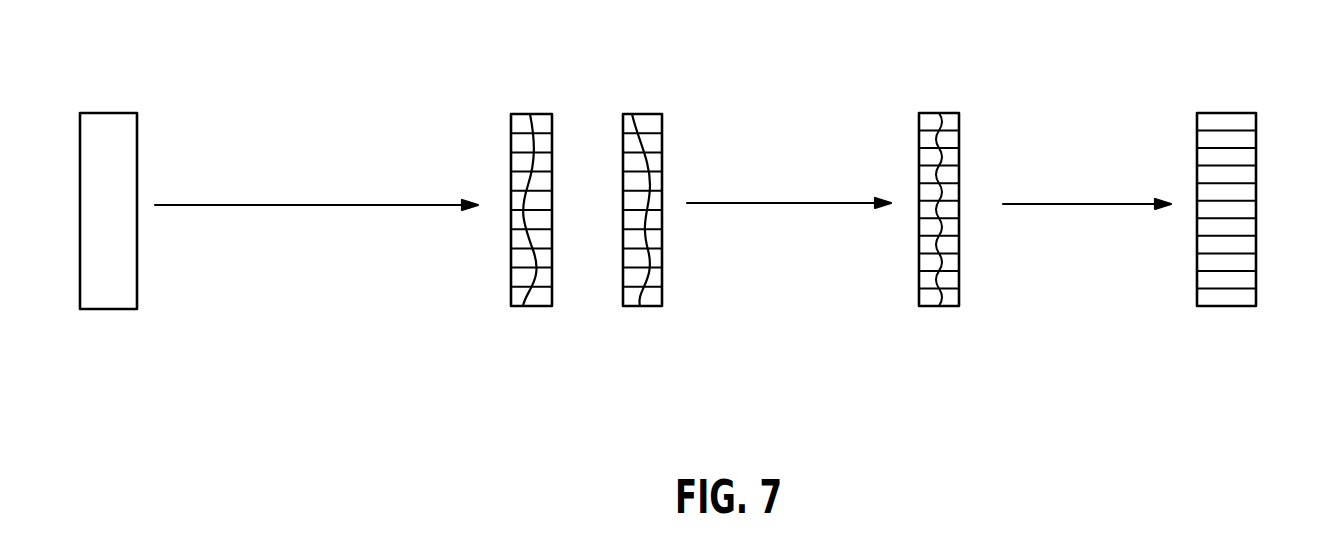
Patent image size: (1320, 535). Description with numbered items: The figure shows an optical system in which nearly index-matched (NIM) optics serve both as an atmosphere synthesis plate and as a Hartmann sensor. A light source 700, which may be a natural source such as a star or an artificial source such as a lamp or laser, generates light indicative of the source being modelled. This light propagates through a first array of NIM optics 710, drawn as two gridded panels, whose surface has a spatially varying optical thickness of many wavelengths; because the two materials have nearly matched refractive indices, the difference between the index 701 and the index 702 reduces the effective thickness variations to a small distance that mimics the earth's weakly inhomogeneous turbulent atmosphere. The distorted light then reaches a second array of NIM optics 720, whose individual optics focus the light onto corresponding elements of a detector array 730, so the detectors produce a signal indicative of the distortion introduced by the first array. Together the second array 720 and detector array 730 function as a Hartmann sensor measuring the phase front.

The light source 700 is at (105, 152).
The first array of NIM optics 710 is at (553, 203).
The refractive index of first NIM material 701 is at (522, 306).
The refractive index of second NIM material 702 is at (538, 301).
The second array of NIM optics 720 is at (963, 90).
The detector array 730 is at (1198, 112).